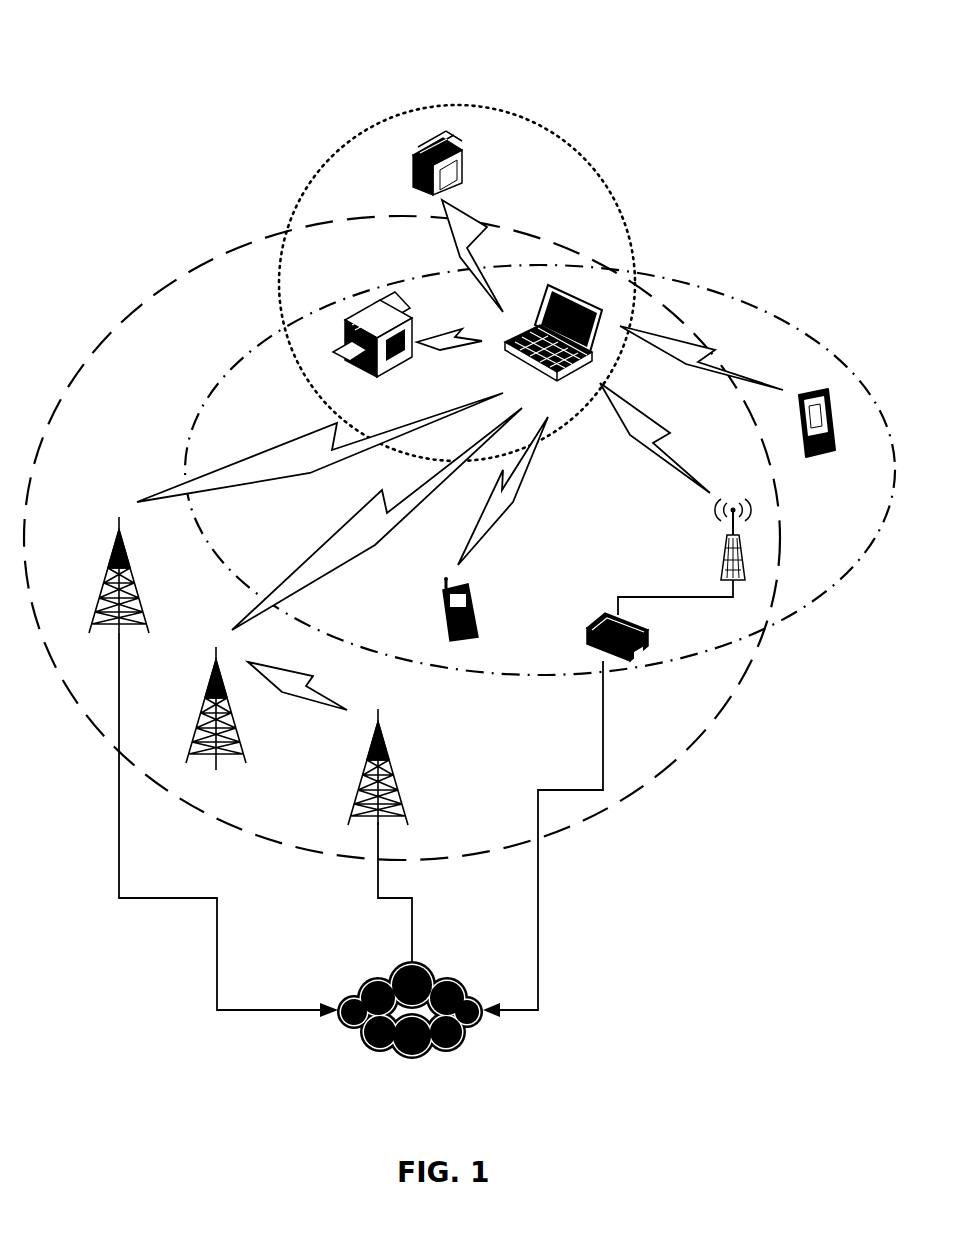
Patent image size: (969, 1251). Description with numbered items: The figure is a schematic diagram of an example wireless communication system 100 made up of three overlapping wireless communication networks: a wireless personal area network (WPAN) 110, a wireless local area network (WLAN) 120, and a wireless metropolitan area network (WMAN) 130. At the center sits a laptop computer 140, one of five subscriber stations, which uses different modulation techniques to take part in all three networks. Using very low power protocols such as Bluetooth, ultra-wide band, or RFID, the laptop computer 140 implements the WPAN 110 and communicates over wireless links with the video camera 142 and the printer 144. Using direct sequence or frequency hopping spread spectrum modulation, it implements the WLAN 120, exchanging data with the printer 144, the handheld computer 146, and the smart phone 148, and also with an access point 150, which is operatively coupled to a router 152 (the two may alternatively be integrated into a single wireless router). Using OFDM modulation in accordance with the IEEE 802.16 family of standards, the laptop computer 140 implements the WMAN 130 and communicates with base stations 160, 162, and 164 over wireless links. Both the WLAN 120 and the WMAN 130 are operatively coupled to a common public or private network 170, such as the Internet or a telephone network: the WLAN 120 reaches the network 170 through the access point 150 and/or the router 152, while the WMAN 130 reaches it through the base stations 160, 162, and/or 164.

The wireless communication system 100 is at (116, 36).
The wireless personal area network (WPAN) 110 is at (458, 105).
The wireless local area network (WLAN) 120 is at (188, 448).
The wireless metropolitan area network (WMAN) 130 is at (215, 255).
The laptop computer 140 is at (562, 283).
The video camera 142 is at (457, 164).
The printer 144 is at (380, 373).
The handheld computer 146 is at (813, 395).
The smart phone 148 is at (468, 595).
The access point (AP) 150 is at (723, 558).
The router 152 is at (597, 620).
The base station 160 is at (112, 563).
The base station 162 is at (208, 695).
The base station 164 is at (370, 760).
The common public or private network 170 is at (367, 977).